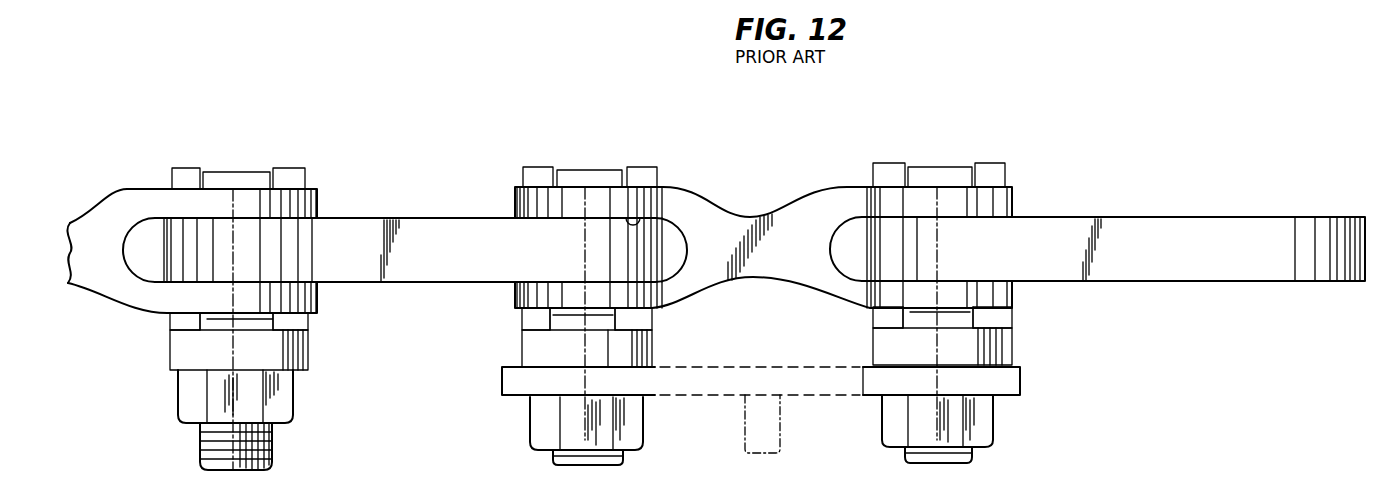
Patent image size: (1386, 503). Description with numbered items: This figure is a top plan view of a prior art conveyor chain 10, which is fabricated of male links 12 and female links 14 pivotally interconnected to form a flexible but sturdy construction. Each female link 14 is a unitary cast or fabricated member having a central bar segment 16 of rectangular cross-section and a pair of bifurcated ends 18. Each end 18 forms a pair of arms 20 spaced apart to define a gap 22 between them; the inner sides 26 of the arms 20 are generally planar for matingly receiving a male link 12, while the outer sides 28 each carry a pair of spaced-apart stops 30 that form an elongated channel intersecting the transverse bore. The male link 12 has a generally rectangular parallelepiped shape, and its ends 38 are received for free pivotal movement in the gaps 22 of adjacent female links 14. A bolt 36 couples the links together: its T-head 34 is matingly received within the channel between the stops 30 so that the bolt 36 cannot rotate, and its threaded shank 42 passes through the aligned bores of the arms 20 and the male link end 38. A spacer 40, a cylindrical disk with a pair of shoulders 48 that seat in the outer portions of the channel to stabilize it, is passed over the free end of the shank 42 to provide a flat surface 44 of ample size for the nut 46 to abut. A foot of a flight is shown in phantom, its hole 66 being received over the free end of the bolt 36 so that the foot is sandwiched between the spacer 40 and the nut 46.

The conveyor chain 10 is at (961, 100).
The male link 12 is at (409, 204).
The female link 14 is at (128, 181).
The central bar segment 16 is at (740, 223).
The bifurcated end 18 is at (317, 192).
The arm 20 is at (220, 205).
The gap 22 is at (683, 249).
The inner side 26 is at (652, 221).
The outer side 28 is at (644, 216).
The stop 30 is at (180, 172).
The T-head 34 is at (248, 170).
The bolt 36 is at (201, 444).
The end of male link 38 is at (898, 244).
The spacer 40 is at (283, 350).
The shank 42 is at (272, 450).
The flat surface 44 is at (530, 373).
The nut 46 is at (293, 397).
The shoulder 48 is at (533, 347).
The hole 66 is at (845, 388).